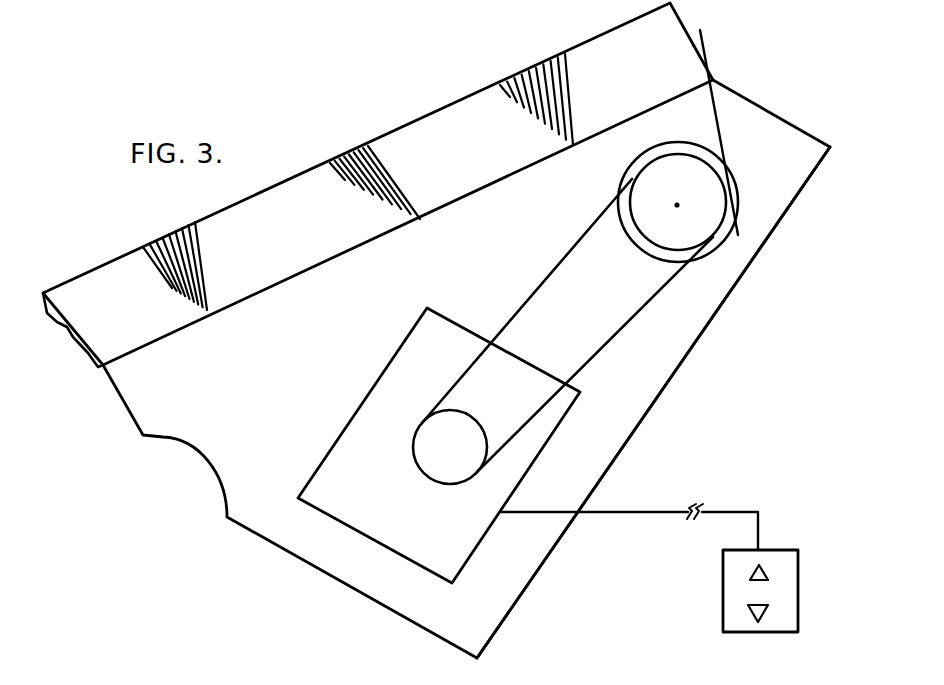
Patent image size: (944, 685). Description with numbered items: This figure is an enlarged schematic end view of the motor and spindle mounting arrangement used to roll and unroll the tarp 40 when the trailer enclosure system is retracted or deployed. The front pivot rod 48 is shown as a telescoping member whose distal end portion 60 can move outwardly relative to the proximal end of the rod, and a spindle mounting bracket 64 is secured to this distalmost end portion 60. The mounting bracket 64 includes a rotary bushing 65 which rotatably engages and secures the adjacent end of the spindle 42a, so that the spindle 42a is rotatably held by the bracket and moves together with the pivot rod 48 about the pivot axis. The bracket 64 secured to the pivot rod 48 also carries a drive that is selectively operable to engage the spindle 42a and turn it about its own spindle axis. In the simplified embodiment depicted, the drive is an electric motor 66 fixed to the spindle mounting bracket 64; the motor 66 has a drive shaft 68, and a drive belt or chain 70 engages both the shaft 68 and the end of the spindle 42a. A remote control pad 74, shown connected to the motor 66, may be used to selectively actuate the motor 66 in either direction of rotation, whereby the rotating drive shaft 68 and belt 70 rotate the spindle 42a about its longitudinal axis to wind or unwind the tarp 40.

The tarp 40 is at (700, 40).
The pivot rod 48 is at (427, 135).
The distal end portion 60 is at (641, 86).
The spindle 42a is at (694, 189).
The rotary bushing 65 is at (735, 230).
The drive belt or chain 70 is at (553, 271).
The spindle mounting bracket 64 is at (652, 361).
The electric motor 66 is at (405, 522).
The drive shaft 68 is at (413, 457).
The remote control pad 74 is at (792, 570).